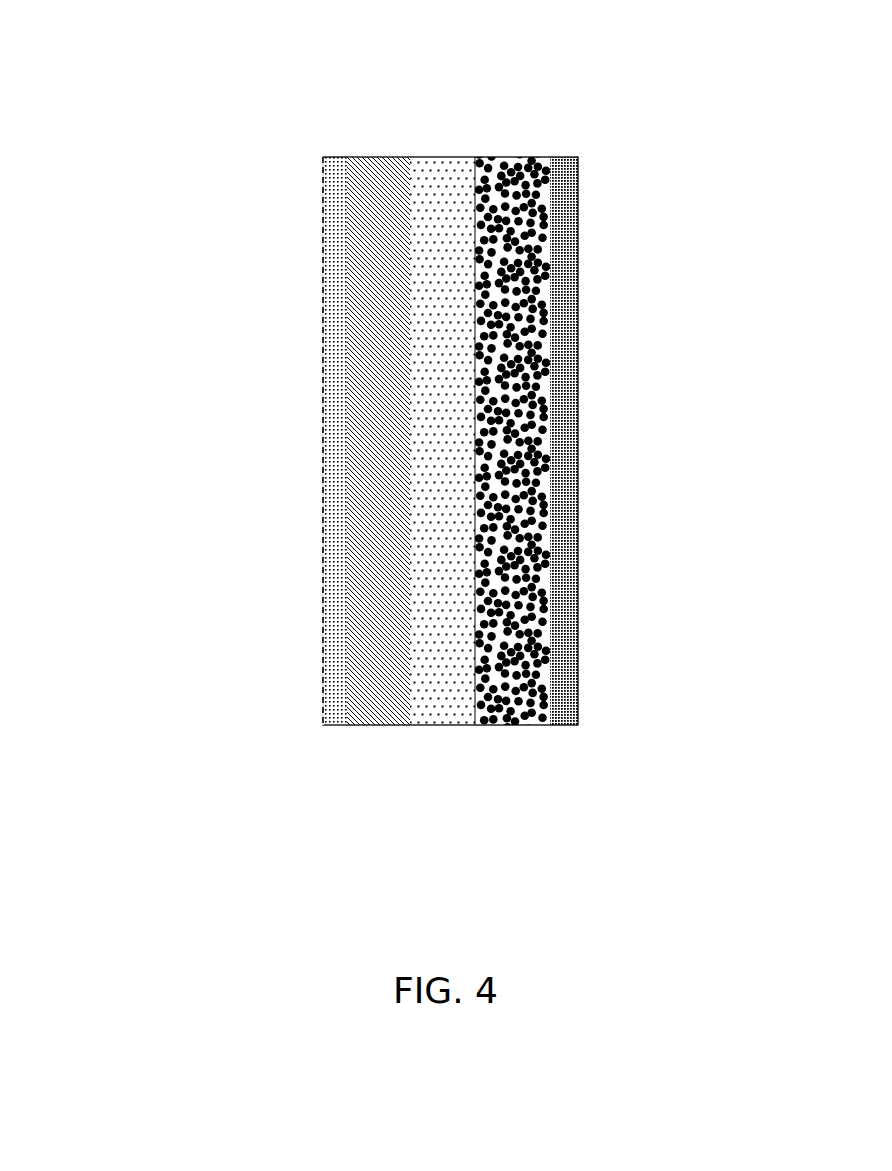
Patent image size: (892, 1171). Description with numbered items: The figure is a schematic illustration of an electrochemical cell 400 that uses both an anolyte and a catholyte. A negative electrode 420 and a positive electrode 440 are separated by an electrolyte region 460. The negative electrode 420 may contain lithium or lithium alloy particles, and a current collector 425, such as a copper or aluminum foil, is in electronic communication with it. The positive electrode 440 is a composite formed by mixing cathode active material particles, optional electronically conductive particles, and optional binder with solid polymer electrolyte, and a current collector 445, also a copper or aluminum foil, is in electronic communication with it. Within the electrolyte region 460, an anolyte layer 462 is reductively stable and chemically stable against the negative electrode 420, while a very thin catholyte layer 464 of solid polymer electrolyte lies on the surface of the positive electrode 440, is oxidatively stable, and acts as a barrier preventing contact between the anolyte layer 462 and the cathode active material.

The electrochemical cell 400 is at (236, 105).
The negative electrode 420 is at (367, 393).
The current collector 425 is at (335, 533).
The positive electrode 440 is at (545, 310).
The current collector 445 is at (562, 583).
The electrolyte region 460 is at (472, 150).
The anolyte layer 462 is at (428, 710).
The catholyte layer 464 is at (476, 732).